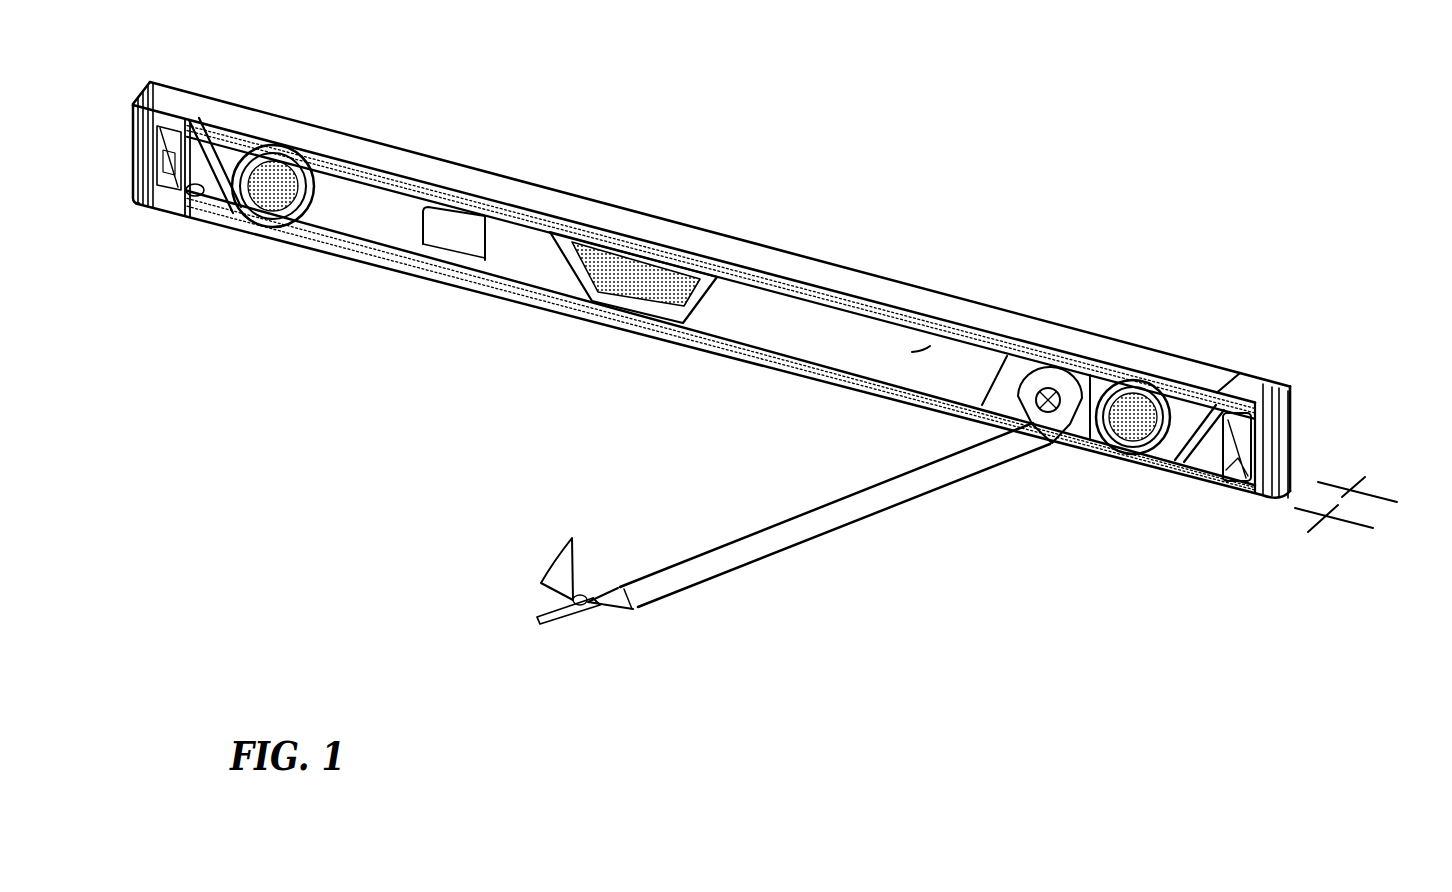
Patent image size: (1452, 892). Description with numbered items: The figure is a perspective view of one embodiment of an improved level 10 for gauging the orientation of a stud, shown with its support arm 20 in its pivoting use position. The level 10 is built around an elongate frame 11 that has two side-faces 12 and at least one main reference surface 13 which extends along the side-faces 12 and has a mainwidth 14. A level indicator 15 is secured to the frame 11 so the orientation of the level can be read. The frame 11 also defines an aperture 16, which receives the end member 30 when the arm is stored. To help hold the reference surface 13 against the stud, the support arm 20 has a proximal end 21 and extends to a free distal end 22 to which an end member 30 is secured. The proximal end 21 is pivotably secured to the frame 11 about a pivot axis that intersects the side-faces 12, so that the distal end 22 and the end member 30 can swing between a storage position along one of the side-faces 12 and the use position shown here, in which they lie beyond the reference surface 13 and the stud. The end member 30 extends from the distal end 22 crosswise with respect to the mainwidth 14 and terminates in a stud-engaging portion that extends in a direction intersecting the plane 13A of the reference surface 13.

The level 10 is at (958, 116).
The elongate frame 11 is at (505, 190).
The side-faces 12 is at (343, 213).
The main reference surface 13 is at (507, 302).
The plane of reference surface 13A is at (1327, 493).
The mainwidth 14 is at (1343, 500).
The level indicator 15 is at (618, 266).
The aperture 16 is at (468, 228).
The support arm 20 is at (825, 518).
The proximal end 21 is at (1045, 423).
The free distal end 22 is at (637, 592).
The end member 30 is at (553, 590).